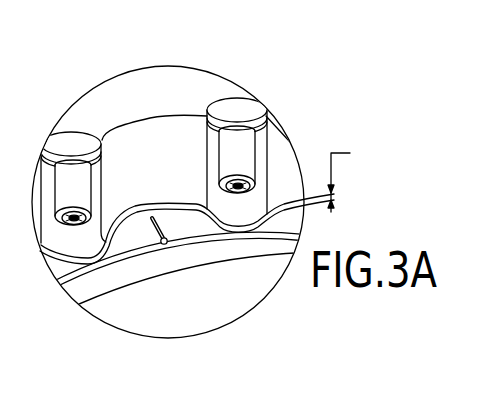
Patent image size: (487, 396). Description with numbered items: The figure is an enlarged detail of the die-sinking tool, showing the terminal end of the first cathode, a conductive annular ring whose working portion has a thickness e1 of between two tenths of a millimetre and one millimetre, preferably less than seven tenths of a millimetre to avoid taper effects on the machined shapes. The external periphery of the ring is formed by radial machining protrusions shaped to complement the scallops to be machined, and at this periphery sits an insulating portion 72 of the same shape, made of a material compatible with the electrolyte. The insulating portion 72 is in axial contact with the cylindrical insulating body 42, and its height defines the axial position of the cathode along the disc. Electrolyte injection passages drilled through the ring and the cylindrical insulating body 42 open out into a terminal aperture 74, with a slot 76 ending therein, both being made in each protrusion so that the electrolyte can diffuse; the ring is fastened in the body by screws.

The cylindrical insulating body 42 is at (197, 90).
The insulating portion 72 is at (142, 134).
The terminal aperture 74 is at (166, 244).
The slot 76 is at (160, 217).
The thickness e1 is at (338, 172).